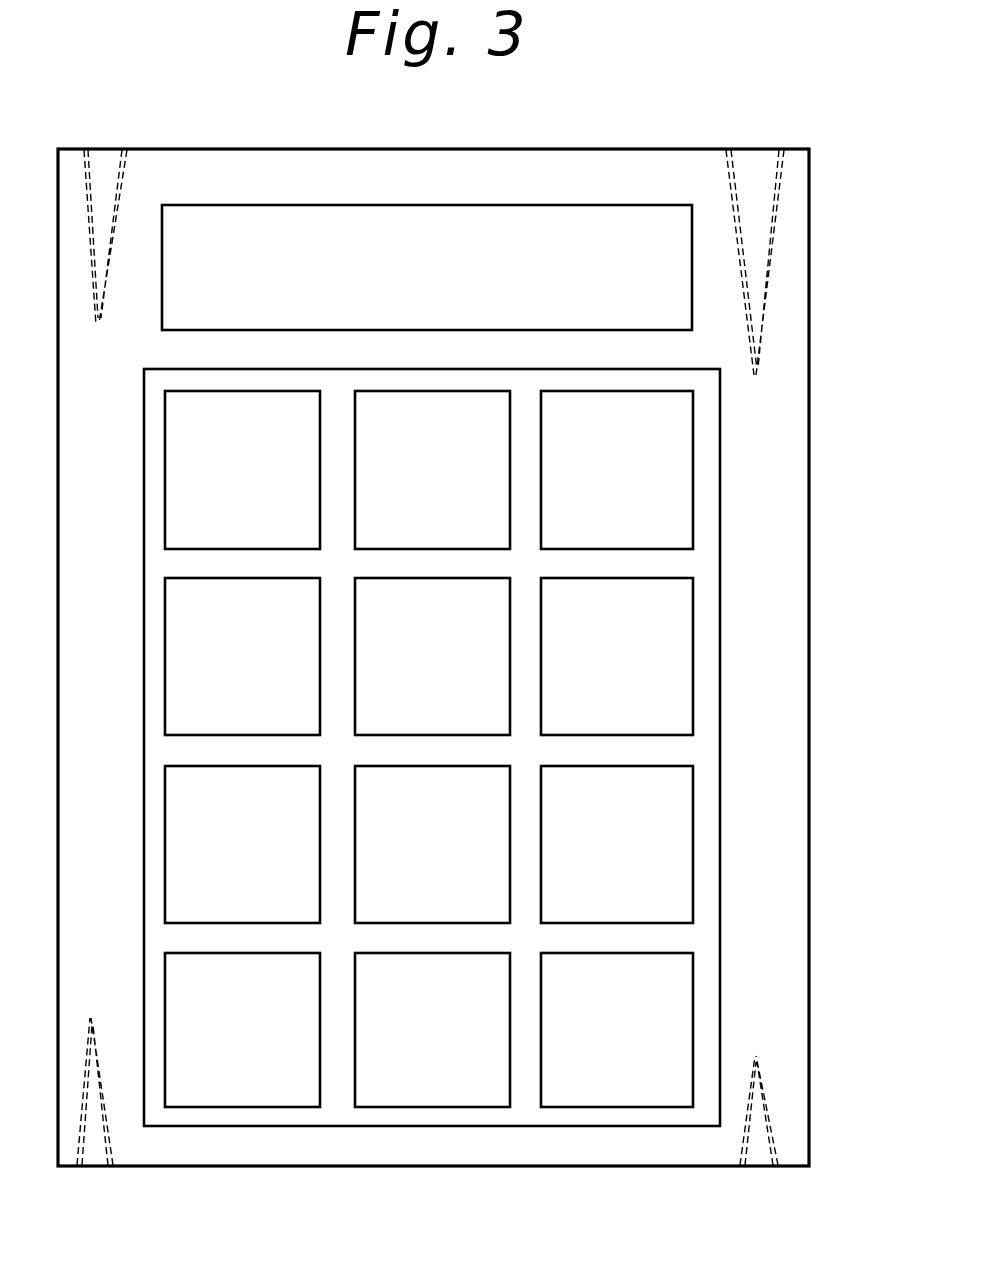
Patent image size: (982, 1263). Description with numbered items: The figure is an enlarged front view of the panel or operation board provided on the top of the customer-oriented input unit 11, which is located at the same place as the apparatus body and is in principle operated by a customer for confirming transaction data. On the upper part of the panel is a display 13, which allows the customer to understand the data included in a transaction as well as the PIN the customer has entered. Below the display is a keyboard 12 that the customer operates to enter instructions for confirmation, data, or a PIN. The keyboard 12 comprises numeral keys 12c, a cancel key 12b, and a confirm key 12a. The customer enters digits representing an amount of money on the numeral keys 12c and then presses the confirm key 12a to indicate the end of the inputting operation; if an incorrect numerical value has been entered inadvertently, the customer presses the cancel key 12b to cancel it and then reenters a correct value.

The customer-oriented input unit 11 is at (810, 353).
The display 13 is at (637, 204).
The keyboard 12 is at (343, 1127).
The numeral keys 12c is at (183, 496).
The cancel key 12b is at (213, 1097).
The confirm key 12a is at (639, 1095).